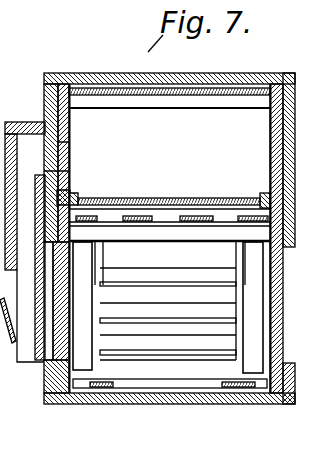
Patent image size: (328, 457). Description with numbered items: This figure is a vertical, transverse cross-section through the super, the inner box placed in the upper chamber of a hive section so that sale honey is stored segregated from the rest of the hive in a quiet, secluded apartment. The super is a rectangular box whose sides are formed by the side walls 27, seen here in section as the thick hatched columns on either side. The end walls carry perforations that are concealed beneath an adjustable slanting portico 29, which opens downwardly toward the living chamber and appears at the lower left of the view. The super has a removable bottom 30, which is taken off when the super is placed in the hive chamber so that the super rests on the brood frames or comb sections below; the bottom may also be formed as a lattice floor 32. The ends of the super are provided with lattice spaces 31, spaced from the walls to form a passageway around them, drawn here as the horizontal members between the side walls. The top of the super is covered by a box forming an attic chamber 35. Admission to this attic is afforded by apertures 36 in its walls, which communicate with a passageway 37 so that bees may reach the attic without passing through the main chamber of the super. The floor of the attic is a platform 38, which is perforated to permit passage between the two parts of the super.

The side walls 27 is at (62, 278).
The adjustable slanting portico 29 is at (8, 347).
The removable bottom 30 is at (125, 403).
The lattice spaces 31 is at (158, 276).
The lattice floor 32 is at (214, 383).
The attic chamber 35 is at (169, 158).
The apertures 36 is at (71, 166).
The passageway 37 is at (21, 133).
The platform 38 is at (135, 204).